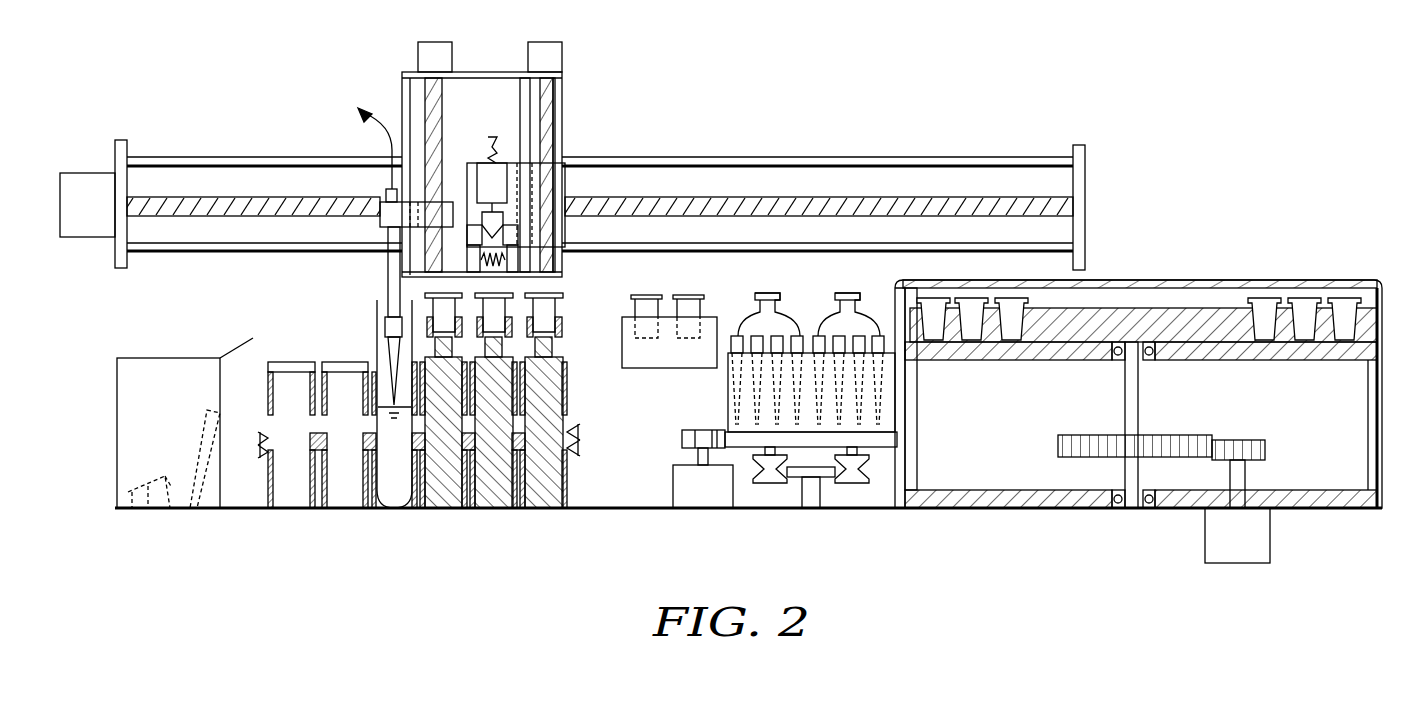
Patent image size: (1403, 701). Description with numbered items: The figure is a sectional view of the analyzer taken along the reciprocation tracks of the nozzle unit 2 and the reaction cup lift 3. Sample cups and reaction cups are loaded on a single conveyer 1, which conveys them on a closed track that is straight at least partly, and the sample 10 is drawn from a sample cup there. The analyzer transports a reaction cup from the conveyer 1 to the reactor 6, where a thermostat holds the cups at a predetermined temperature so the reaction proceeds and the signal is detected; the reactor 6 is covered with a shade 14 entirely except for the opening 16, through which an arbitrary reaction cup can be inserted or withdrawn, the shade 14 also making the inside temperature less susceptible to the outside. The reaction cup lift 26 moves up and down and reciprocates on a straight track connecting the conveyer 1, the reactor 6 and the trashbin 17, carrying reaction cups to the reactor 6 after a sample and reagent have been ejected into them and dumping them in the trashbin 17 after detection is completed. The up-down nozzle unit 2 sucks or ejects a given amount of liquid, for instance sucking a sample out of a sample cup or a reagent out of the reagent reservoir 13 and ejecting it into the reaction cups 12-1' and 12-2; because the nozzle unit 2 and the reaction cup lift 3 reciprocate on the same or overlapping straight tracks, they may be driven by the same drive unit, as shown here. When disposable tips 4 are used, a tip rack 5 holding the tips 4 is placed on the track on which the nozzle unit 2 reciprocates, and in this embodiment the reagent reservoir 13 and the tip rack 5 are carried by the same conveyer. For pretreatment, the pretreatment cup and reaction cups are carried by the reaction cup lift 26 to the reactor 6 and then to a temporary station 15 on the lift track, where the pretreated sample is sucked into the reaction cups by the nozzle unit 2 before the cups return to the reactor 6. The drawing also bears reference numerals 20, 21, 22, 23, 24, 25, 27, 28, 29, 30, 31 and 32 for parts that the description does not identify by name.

The conveyer 1 is at (563, 407).
The nozzle unit 2 is at (388, 285).
The reaction cup lift 3 is at (550, 175).
The tips 4 is at (386, 352).
The tip rack 5 is at (728, 422).
The reactor 6 is at (1173, 318).
The sample 10 is at (386, 316).
The reaction cup 12-1' is at (517, 306).
The reaction cup 12-2 is at (550, 322).
The reagent reservoir 13 is at (780, 300).
The shade 14 is at (1130, 283).
The temporary station 15 is at (710, 325).
The opening 16 is at (910, 282).
The trashbin 17 is at (200, 358).
The drive motor 20 is at (82, 172).
The guide rail with feed screw 21 is at (328, 157).
The upper block 22 is at (447, 58).
The upper block 23 is at (548, 60).
The guide column 24 is at (548, 125).
The guide shaft 25 is at (520, 99).
The reaction cup lift 26 is at (480, 185).
The motor 27 is at (682, 441).
The motor base 28 is at (673, 492).
The roller support 29 is at (800, 470).
The chamber drive motor 30 is at (1262, 545).
The gear 31 is at (1240, 440).
The bearing 32 is at (1150, 358).